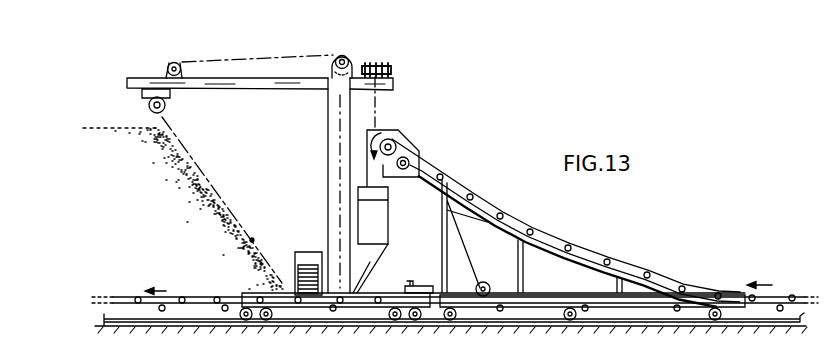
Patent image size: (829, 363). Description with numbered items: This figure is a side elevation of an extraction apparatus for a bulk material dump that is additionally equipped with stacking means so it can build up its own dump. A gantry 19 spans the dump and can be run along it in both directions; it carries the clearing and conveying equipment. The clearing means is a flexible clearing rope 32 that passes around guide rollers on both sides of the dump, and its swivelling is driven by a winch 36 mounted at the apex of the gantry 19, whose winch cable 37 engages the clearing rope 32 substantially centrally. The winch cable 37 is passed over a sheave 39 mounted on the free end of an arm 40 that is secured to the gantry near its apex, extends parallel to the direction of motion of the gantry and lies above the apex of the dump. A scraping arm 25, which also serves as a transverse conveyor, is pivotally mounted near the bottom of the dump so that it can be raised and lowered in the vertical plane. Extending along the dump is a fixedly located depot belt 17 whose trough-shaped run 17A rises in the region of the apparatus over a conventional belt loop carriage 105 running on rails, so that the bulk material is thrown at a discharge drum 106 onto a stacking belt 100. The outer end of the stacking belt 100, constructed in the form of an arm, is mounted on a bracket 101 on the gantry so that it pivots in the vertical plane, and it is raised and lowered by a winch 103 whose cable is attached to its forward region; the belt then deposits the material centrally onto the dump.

The depot belt 17 is at (195, 301).
The trough-shaped run 17A is at (492, 212).
The gantry 19 is at (322, 126).
The scraping arm 25 is at (306, 266).
The clearing rope 32 is at (255, 242).
The winch 36 is at (340, 54).
The winch cable 37 is at (235, 57).
The sheave 39 is at (166, 109).
The arm 40 is at (257, 90).
The stacking belt 100 is at (358, 194).
The bracket 101 is at (368, 260).
The winch 103 is at (379, 62).
The belt loop carriage 105 is at (578, 250).
The discharge drum 106 is at (397, 140).